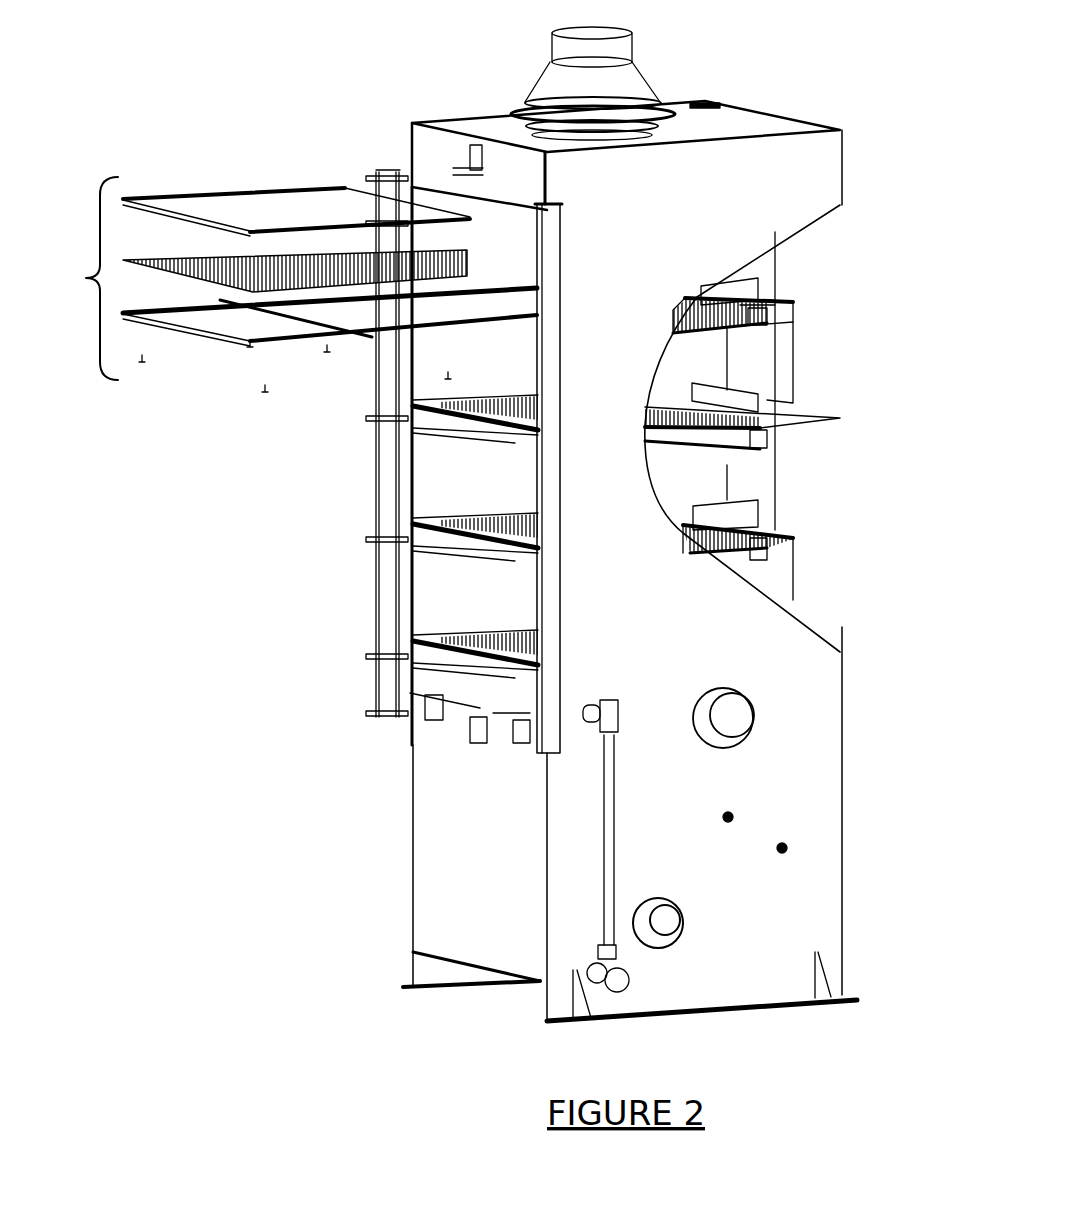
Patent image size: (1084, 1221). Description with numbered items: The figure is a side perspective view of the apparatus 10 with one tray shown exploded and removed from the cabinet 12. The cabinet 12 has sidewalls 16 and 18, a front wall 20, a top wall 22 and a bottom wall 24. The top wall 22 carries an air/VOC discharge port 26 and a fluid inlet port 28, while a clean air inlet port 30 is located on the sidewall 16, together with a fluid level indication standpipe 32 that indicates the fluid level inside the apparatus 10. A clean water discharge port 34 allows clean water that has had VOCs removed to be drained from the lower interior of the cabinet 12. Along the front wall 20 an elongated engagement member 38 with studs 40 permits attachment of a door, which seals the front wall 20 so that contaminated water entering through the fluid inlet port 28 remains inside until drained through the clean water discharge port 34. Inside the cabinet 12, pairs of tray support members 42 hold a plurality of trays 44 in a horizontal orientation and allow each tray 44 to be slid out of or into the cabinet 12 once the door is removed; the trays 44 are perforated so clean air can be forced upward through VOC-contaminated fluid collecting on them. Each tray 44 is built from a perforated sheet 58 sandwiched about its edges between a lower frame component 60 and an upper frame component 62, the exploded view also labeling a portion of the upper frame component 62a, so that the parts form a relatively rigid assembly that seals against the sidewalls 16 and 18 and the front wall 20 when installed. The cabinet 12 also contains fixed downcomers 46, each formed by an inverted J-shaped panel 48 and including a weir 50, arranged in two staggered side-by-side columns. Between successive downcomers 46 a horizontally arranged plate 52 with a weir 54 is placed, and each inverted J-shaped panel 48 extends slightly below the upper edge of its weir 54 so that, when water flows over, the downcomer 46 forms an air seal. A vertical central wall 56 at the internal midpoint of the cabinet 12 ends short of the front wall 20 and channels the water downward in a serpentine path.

The apparatus 10 is at (185, 40).
The cabinet 12 is at (755, 108).
The sidewall 16 is at (800, 897).
The sidewall 18 is at (443, 120).
The front wall 20 is at (430, 155).
The top wall 22 is at (765, 126).
The bottom wall 24 is at (462, 962).
The air/VOC discharge port 26 is at (625, 85).
The fluid inlet port 28 is at (712, 103).
The clean air inlet port 30 is at (700, 700).
The fluid level indication standpipe 32 is at (610, 793).
The clean water discharge port 34 is at (640, 905).
The elongated engagement member 38 is at (383, 433).
The studs 40 is at (373, 656).
The tray support members 42 is at (460, 310).
The trays 44 is at (519, 630).
The downcomers 46 is at (798, 362).
The inverted J-shaped panel 48 is at (770, 322).
The weir 50 is at (735, 287).
The horizontally arranged plate 52 is at (800, 420).
The weir 54 is at (715, 392).
The central wall 56 is at (745, 488).
The perforated sheet 58 is at (200, 258).
The lower frame component 60 is at (220, 332).
The upper frame component 62 is at (195, 197).
The upper frame front bar 62a is at (250, 229).